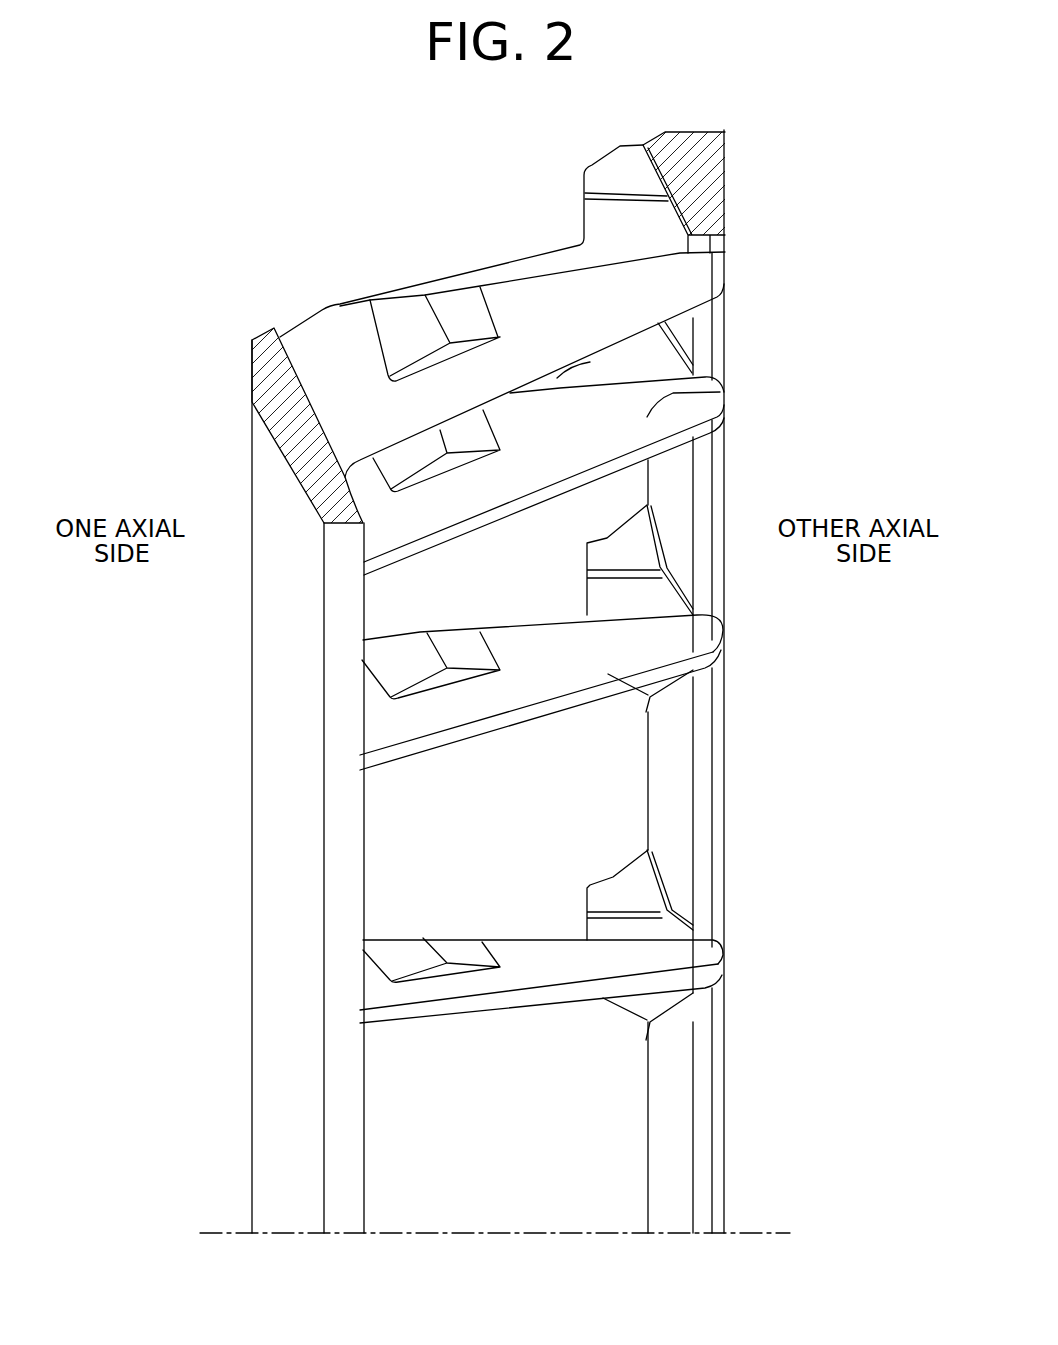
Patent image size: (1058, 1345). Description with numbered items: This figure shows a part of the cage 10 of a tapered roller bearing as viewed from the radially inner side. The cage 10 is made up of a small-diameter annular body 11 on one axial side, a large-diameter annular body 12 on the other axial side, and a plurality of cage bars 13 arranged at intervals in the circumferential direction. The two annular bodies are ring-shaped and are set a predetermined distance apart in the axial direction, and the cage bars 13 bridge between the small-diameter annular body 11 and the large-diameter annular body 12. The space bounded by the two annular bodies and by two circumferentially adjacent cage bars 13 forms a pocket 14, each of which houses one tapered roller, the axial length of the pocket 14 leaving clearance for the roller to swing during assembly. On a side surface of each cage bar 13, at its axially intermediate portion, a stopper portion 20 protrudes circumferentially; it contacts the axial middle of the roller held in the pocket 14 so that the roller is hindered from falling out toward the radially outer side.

The cage 10 is at (250, 998).
The small-diameter annular body 11 is at (345, 1118).
The large-diameter annular body 12 is at (722, 790).
The cage bar 13 is at (531, 298).
The pocket 14 is at (411, 596).
The stopper portion 20 is at (453, 283).